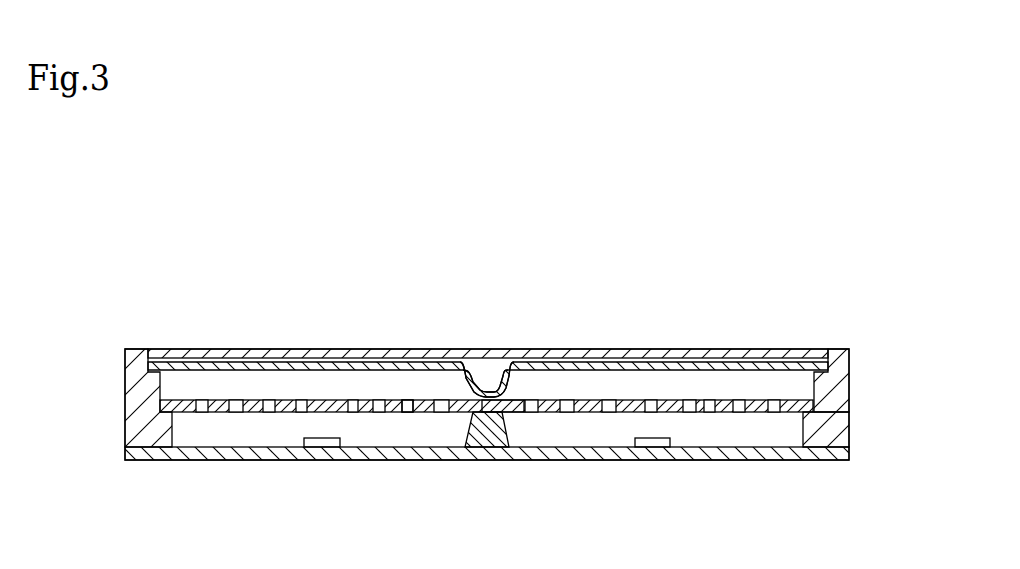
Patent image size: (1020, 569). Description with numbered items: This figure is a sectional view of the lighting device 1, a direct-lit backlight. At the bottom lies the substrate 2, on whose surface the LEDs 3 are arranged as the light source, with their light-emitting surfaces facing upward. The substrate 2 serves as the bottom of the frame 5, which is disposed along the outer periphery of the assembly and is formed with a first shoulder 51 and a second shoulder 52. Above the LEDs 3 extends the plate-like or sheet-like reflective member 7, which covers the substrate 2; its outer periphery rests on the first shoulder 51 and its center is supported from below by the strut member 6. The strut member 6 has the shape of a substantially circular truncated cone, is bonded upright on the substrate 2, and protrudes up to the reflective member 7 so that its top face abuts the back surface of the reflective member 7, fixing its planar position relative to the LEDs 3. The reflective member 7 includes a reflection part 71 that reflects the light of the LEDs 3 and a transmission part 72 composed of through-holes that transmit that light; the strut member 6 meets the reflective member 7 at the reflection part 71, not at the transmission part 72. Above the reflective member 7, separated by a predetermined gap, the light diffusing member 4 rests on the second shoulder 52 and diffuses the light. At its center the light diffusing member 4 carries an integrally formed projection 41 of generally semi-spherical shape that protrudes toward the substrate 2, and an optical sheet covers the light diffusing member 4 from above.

The lighting device 1 is at (126, 348).
The substrate 2 is at (216, 454).
The LEDs 3 is at (336, 434).
The light diffusing member 4 is at (652, 365).
The projection 41 is at (463, 385).
The frame 5 is at (130, 403).
The first shoulder 51 is at (808, 429).
The second shoulder 52 is at (832, 383).
The strut member 6 is at (493, 427).
The reflective member 7 is at (182, 401).
The reflection part 71 is at (518, 402).
The transmission part 72 is at (407, 401).